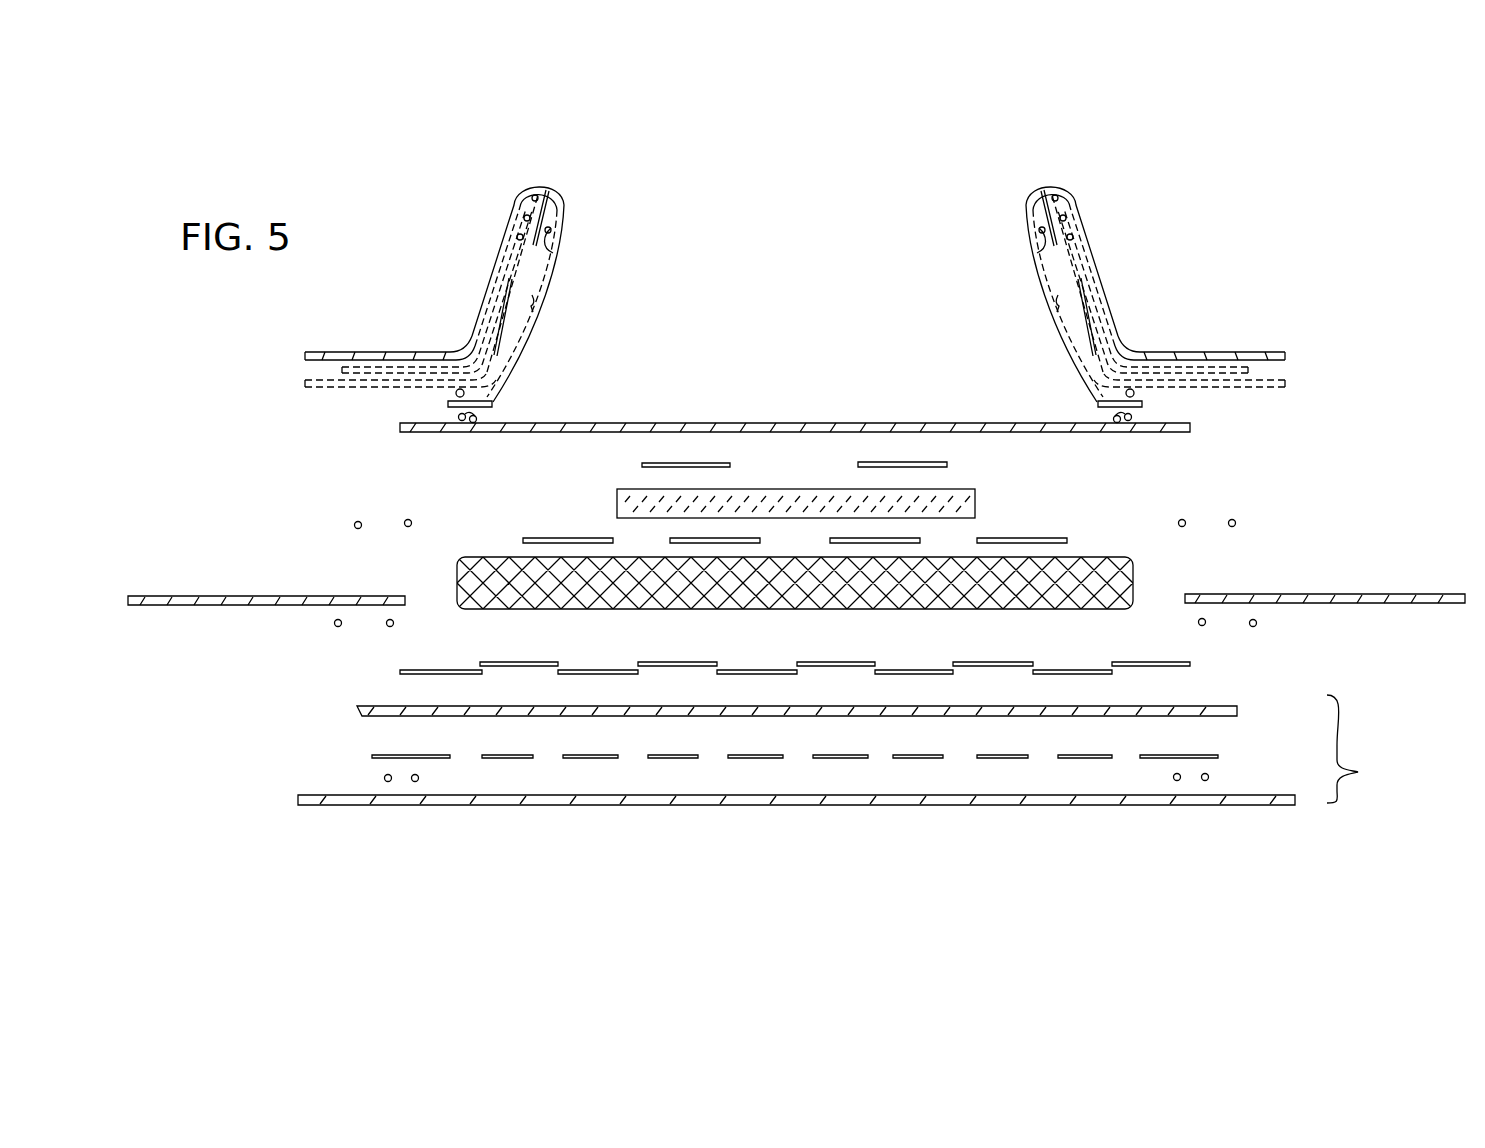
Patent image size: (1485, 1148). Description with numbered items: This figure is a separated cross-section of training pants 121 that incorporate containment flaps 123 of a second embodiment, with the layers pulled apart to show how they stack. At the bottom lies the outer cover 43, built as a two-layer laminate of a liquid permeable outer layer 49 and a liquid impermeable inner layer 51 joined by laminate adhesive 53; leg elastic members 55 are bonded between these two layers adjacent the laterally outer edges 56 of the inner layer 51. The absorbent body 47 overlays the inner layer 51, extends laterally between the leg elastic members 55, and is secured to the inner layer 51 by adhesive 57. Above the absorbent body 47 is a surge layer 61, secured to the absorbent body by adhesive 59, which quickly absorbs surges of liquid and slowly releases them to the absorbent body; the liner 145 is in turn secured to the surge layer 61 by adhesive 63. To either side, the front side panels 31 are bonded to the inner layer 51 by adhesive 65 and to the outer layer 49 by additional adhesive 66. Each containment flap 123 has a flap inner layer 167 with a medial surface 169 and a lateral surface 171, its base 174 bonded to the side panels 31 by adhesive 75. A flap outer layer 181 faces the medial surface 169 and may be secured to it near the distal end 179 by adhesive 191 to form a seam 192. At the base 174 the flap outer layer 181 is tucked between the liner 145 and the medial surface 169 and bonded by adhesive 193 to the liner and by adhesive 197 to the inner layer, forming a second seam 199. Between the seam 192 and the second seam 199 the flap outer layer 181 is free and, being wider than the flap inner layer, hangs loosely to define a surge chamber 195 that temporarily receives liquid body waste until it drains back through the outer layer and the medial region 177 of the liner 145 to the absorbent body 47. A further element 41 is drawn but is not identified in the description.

The front side panels 31 is at (240, 596).
The base assembly 41 is at (832, 788).
The outer cover 43 is at (1362, 749).
The absorbent body 47 is at (458, 580).
The outer layer 49 is at (563, 807).
The inner layer 51 is at (963, 717).
The laminate adhesive 53 is at (832, 760).
The leg elastic members 55 is at (415, 782).
The laterally outer edges 56 is at (787, 721).
The adhesive 57 is at (433, 674).
The adhesive 59 is at (1043, 540).
The surge layer 61 is at (617, 497).
The adhesive 63 is at (930, 462).
The adhesive 65 is at (386, 625).
The additional adhesive 66 is at (334, 624).
The adhesive 75 is at (405, 521).
The training pants 121 is at (801, 300).
The containment flaps 123 is at (801, 300).
The liner 145 is at (628, 433).
The flap inner layer 167 is at (331, 390).
The medial surface 169 is at (358, 388).
The lateral surface 171 is at (497, 347).
The base 174 is at (805, 425).
The medial region 177 is at (795, 427).
The distal end 179 is at (605, 130).
The flap outer layer 181 is at (501, 246).
The adhesive 191 is at (560, 250).
The seam 192 is at (556, 233).
The adhesive 193 is at (468, 424).
The surge chamber 195 is at (545, 299).
The adhesive 197 is at (478, 399).
The second seam 199 is at (467, 391).